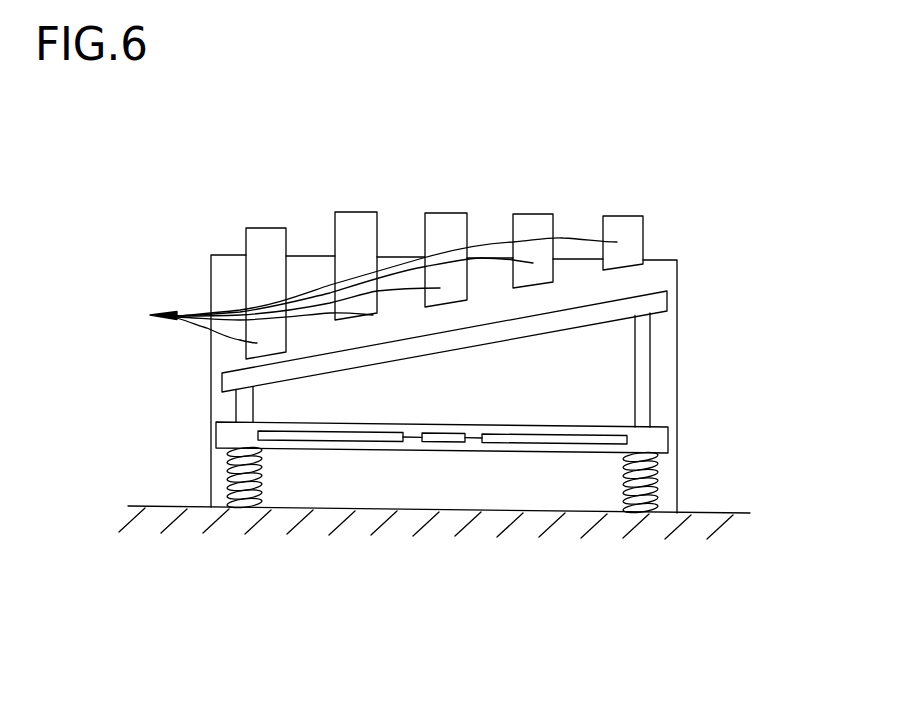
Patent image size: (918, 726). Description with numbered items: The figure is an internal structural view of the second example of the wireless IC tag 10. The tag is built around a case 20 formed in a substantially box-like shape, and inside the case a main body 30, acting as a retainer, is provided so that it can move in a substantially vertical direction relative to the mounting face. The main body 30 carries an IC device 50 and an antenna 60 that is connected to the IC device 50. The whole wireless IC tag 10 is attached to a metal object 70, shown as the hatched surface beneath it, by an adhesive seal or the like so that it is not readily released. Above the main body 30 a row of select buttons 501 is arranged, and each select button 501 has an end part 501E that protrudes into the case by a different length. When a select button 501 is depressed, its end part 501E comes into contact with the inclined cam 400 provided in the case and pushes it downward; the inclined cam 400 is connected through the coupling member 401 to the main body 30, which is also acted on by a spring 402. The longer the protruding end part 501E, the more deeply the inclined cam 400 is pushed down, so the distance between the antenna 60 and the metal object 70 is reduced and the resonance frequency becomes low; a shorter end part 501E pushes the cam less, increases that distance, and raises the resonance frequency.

The wireless IC tag 10 is at (591, 124).
The case 20 is at (210, 270).
The main body 30 is at (668, 437).
The IC device 50 is at (448, 432).
The antenna 60 is at (340, 431).
The metal object 70 is at (426, 625).
The inclined cam 400 is at (660, 303).
The coupling member 401 is at (243, 403).
The spring 402 is at (228, 467).
The select button 501 is at (267, 228).
The end part 501E is at (349, 290).